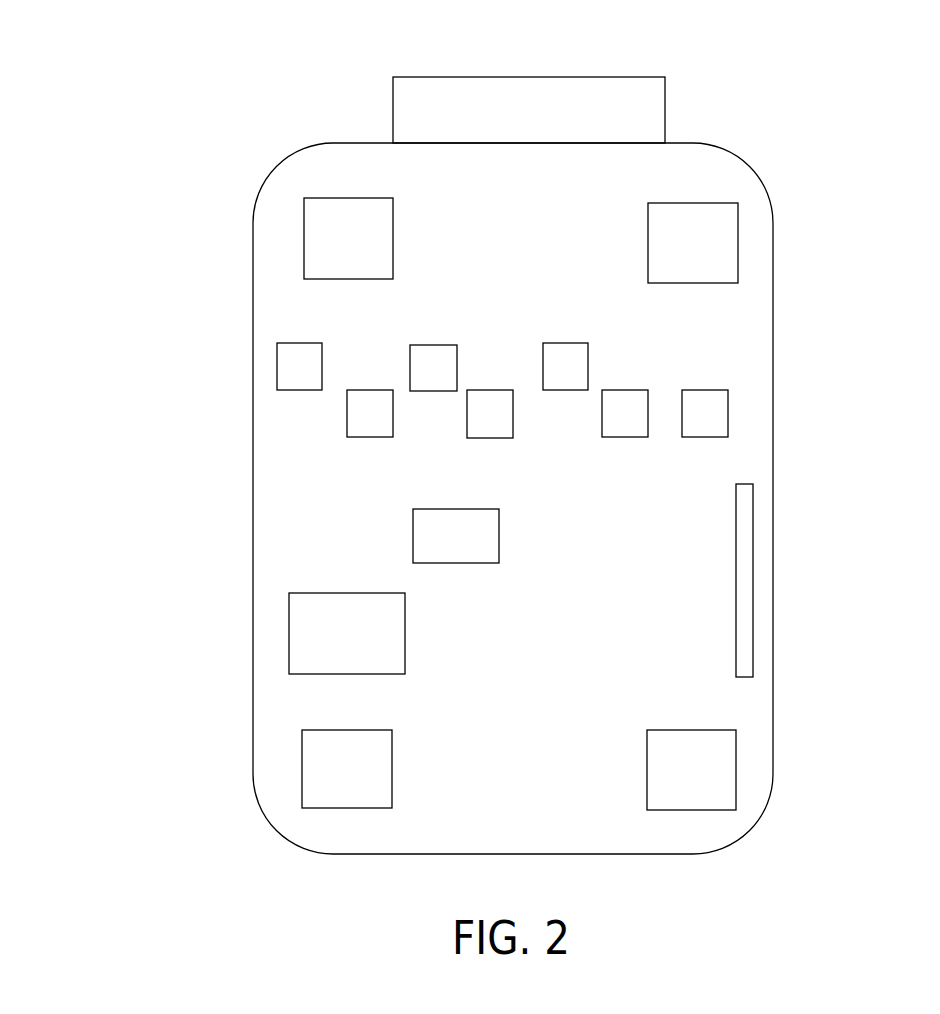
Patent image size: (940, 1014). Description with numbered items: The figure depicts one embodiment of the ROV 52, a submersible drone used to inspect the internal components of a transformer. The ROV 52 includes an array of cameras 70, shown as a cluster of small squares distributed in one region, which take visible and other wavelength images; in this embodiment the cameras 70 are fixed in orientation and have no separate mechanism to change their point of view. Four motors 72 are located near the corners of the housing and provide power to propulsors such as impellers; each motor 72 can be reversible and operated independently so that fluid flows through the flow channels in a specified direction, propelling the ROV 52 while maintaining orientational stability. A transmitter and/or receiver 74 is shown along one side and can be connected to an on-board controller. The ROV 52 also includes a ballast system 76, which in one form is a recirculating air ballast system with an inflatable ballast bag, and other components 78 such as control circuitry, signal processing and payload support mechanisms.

The ROV 52 is at (778, 338).
The cameras 70 is at (560, 345).
The motors 72 is at (332, 252).
The transmitter and/or receiver 74 is at (753, 586).
The ballast system 76 is at (393, 110).
The other components 78 is at (413, 540).